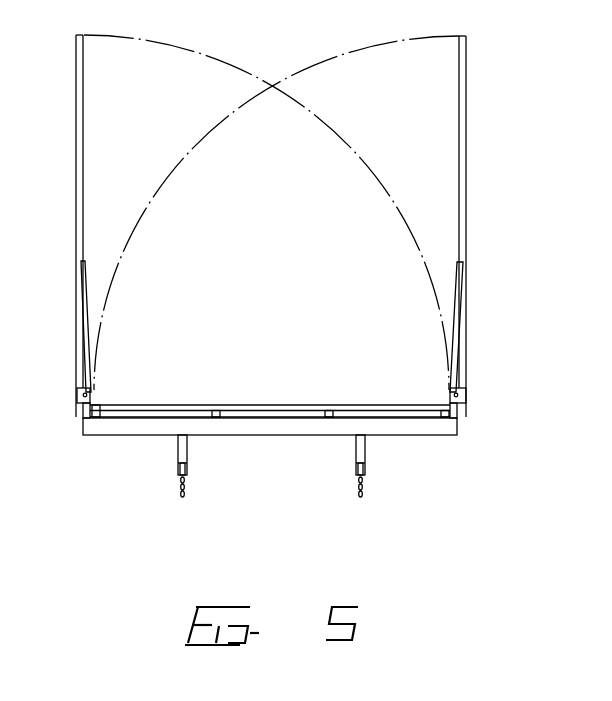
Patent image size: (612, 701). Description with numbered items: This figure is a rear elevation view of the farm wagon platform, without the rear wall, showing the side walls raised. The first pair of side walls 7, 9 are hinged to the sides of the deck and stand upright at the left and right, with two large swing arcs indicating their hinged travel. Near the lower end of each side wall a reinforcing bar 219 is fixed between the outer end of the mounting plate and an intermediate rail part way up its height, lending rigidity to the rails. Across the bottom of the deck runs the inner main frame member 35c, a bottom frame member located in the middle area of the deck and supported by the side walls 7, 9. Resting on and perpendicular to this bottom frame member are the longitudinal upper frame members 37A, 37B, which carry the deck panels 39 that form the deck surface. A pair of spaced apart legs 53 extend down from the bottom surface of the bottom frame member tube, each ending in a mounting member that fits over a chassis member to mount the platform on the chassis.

The side wall 7 is at (68, 190).
The side wall 9 is at (472, 177).
The reinforcing bar 219 is at (88, 319).
The inner main frame member 35c is at (113, 436).
The deck panel 39 is at (168, 405).
The upper frame member 37A is at (333, 413).
The upper frame member 37B is at (222, 413).
The leg 53 is at (177, 468).